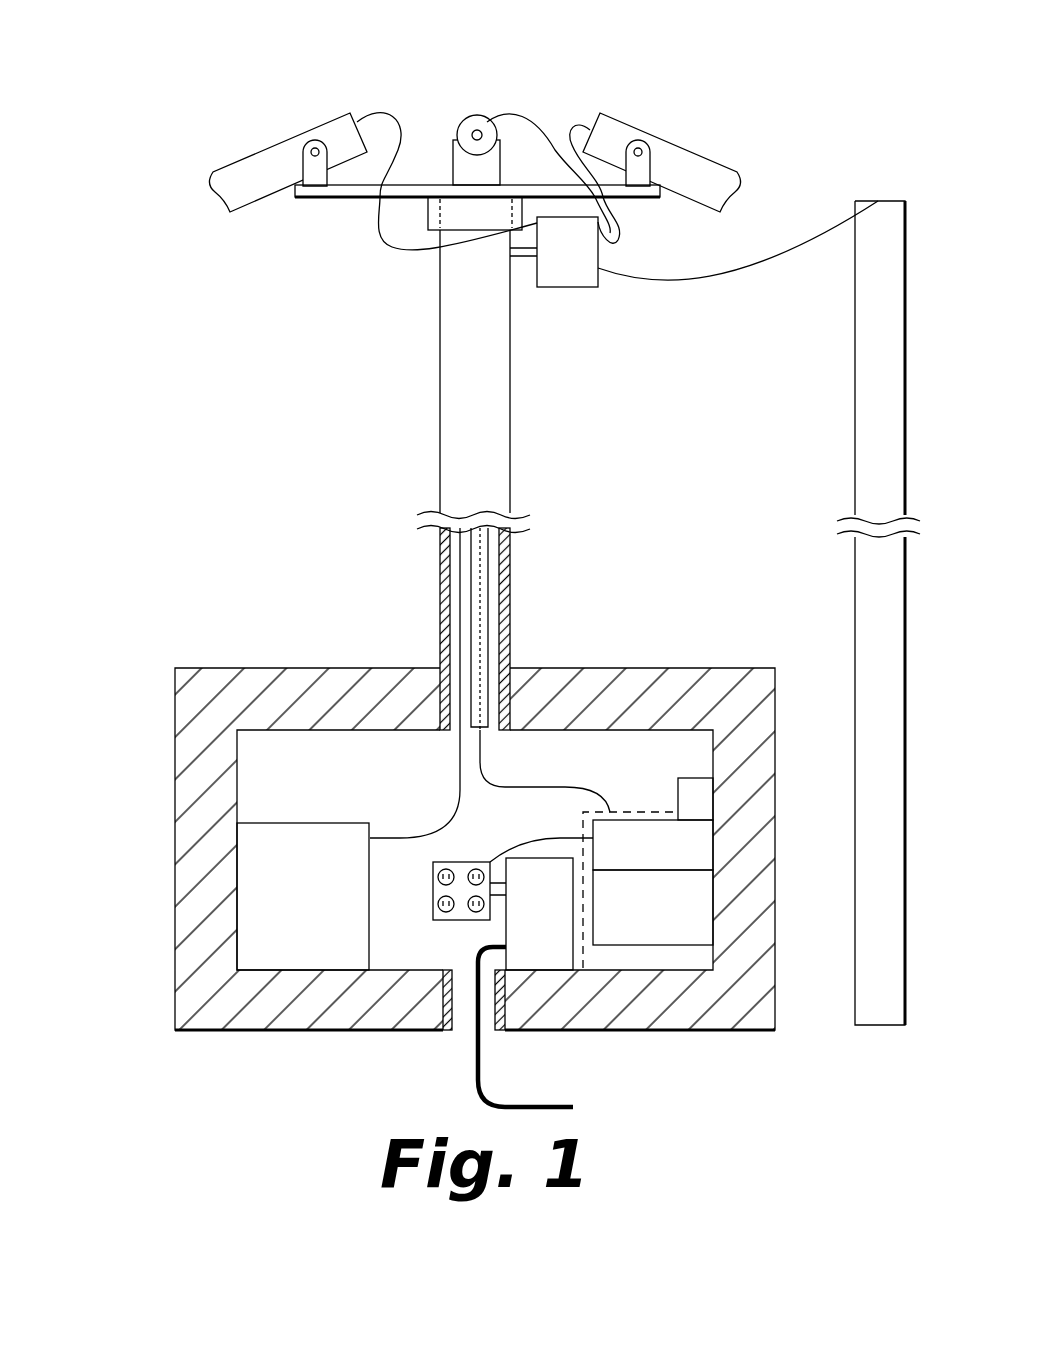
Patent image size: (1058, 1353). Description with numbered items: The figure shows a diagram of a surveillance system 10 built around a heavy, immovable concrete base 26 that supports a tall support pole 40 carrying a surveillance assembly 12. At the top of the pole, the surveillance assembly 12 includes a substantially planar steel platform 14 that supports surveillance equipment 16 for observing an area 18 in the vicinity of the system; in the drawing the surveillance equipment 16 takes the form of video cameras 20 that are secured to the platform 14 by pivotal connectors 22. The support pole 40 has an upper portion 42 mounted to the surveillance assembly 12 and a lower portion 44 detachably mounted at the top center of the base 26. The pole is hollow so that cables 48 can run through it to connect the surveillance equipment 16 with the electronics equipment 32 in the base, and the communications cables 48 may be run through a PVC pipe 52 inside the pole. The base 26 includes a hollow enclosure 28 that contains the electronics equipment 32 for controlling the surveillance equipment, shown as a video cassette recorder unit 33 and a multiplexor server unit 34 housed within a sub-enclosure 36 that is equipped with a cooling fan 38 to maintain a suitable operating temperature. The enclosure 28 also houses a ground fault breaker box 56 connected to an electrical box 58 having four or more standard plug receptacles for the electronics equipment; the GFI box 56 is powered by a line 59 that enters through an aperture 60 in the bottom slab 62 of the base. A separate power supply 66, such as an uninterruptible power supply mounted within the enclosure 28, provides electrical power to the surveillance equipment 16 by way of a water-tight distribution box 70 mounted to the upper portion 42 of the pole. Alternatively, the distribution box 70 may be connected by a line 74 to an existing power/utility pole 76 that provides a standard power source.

The surveillance system 10 is at (152, 240).
The surveillance assembly 12 is at (588, 100).
The platform 14 is at (642, 207).
The surveillance equipment 16 is at (288, 128).
The area 18 is at (103, 939).
The video cameras 20 is at (241, 163).
The pivotal connectors 22 is at (312, 198).
The base 26 is at (215, 640).
The enclosure 28 is at (172, 765).
The electronics equipment 32 is at (665, 800).
The video cassette recorder unit 33 is at (713, 845).
The multiplexor server unit 34 is at (713, 905).
The sub-enclosure 36 is at (633, 810).
The cooling fan 38 is at (713, 803).
The support pole 40 is at (437, 412).
The upper portion 42 is at (430, 223).
The lower portion 44 is at (440, 655).
The cables 48 is at (548, 785).
The PVC pipe 52 is at (488, 578).
The ground fault breaker (GFI) box 56 is at (543, 960).
The electrical box 58 is at (465, 862).
The line 59 is at (476, 1058).
The aperture 60 is at (463, 975).
The bottom portion or slab 62 is at (680, 1032).
The power supply 66 is at (306, 823).
The distribution box 70 is at (561, 289).
The line 74 is at (668, 283).
The power/utility pole 76 is at (855, 375).